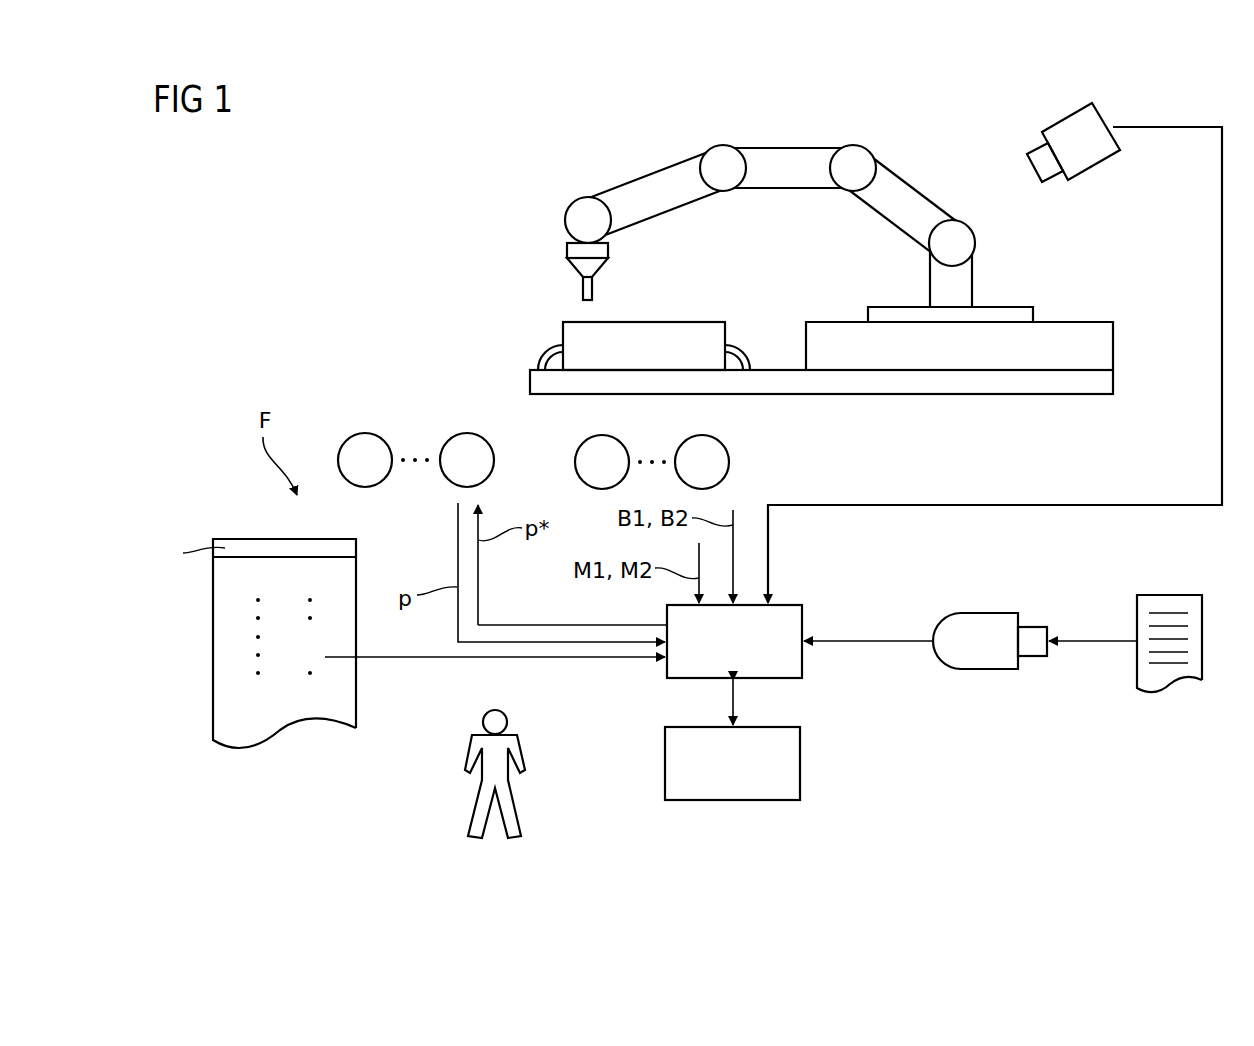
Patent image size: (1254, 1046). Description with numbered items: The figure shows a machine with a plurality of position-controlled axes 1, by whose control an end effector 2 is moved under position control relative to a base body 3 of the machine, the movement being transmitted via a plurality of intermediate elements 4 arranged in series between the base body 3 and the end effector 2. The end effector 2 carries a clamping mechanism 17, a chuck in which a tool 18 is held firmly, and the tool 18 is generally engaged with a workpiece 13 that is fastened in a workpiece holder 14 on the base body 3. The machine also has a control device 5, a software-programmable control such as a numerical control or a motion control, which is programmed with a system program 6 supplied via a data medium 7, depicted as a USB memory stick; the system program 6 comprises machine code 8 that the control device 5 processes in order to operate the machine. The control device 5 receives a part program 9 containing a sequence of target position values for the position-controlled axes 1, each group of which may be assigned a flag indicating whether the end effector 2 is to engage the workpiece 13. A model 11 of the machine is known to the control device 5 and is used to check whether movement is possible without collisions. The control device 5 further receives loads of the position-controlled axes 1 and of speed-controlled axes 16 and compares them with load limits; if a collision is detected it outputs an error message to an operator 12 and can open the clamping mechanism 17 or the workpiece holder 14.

The position-controlled axes 1 is at (365, 432).
The end effector 2 is at (567, 248).
The base body 3 is at (993, 385).
The intermediate elements 4 is at (653, 172).
The control device 5 is at (802, 663).
The system program 6 is at (1157, 690).
The data medium 7 is at (985, 672).
The machine code 8 is at (1185, 622).
The part program 9 is at (252, 537).
The model 11 is at (800, 760).
The operator 12 is at (472, 800).
The workpiece 13 is at (712, 322).
The workpiece holder 14 is at (547, 352).
The speed-controlled axes 16 is at (575, 462).
The clamping mechanism 17 is at (575, 268).
The tool 18 is at (595, 288).